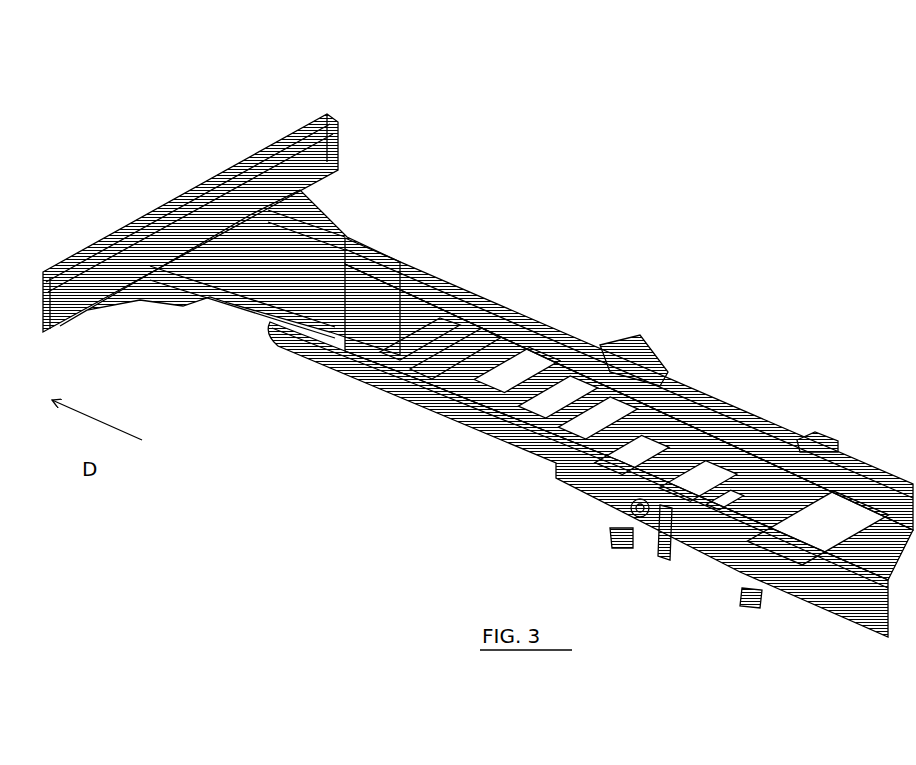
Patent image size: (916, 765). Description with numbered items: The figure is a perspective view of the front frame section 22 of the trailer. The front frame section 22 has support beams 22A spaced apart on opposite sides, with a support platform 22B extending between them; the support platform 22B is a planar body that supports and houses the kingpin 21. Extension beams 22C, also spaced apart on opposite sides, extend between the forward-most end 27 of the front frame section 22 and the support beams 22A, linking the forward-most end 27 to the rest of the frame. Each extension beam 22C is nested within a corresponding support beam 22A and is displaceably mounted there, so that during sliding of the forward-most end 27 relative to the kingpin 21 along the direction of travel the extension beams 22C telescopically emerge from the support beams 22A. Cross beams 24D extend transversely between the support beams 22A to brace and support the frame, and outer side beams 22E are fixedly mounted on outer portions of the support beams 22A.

The kingpin 21 is at (400, 310).
The front frame section 22 is at (590, 378).
The support beams 22A is at (485, 300).
The support platform 22B is at (440, 320).
The extension beams 22C is at (347, 236).
The outer side beams 22E is at (541, 322).
The cross beams 24D is at (653, 375).
The forward-most end 27 is at (326, 118).